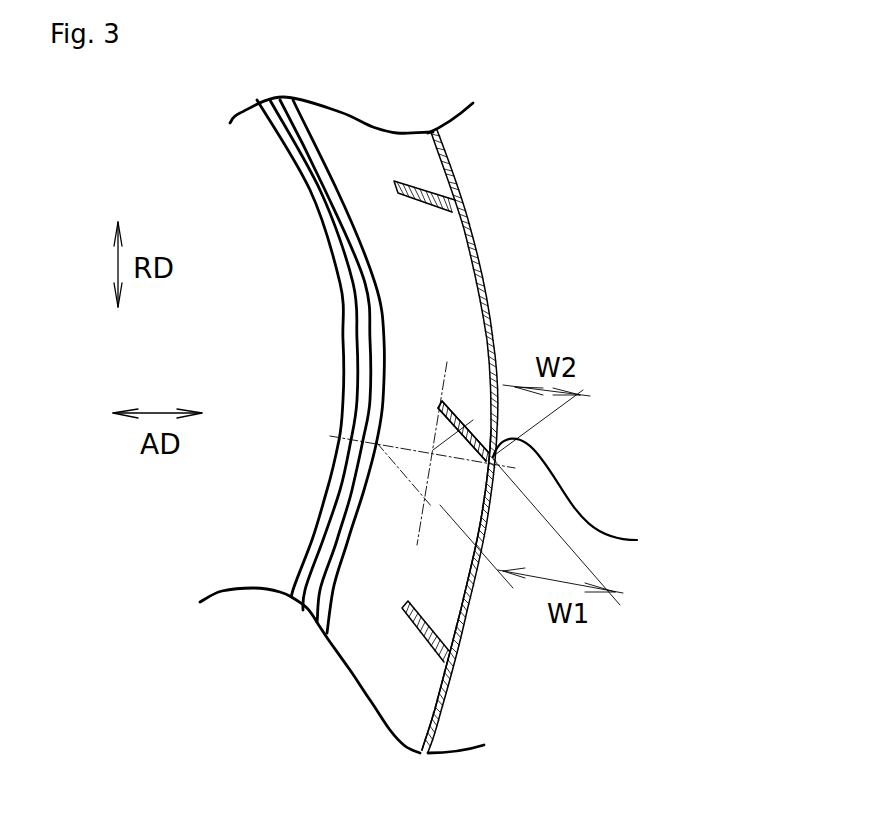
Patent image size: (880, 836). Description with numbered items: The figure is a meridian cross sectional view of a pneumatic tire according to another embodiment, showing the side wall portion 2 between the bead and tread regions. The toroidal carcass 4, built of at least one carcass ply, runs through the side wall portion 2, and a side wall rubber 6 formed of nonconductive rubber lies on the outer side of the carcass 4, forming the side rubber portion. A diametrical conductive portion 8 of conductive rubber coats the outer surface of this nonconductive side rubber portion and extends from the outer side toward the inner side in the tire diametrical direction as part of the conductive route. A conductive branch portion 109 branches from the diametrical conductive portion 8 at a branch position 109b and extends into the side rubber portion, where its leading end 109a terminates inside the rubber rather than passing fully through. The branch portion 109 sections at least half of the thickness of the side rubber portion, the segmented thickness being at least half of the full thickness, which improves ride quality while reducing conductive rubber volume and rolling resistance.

The side wall portion 2 is at (595, 455).
The carcass 4 is at (363, 312).
The side wall rubber 6 is at (427, 683).
The diametrical conductive portion 8 is at (467, 228).
The conductive branch portion 109 is at (446, 403).
The leading end 109a is at (440, 404).
The branch position 109b is at (601, 497).